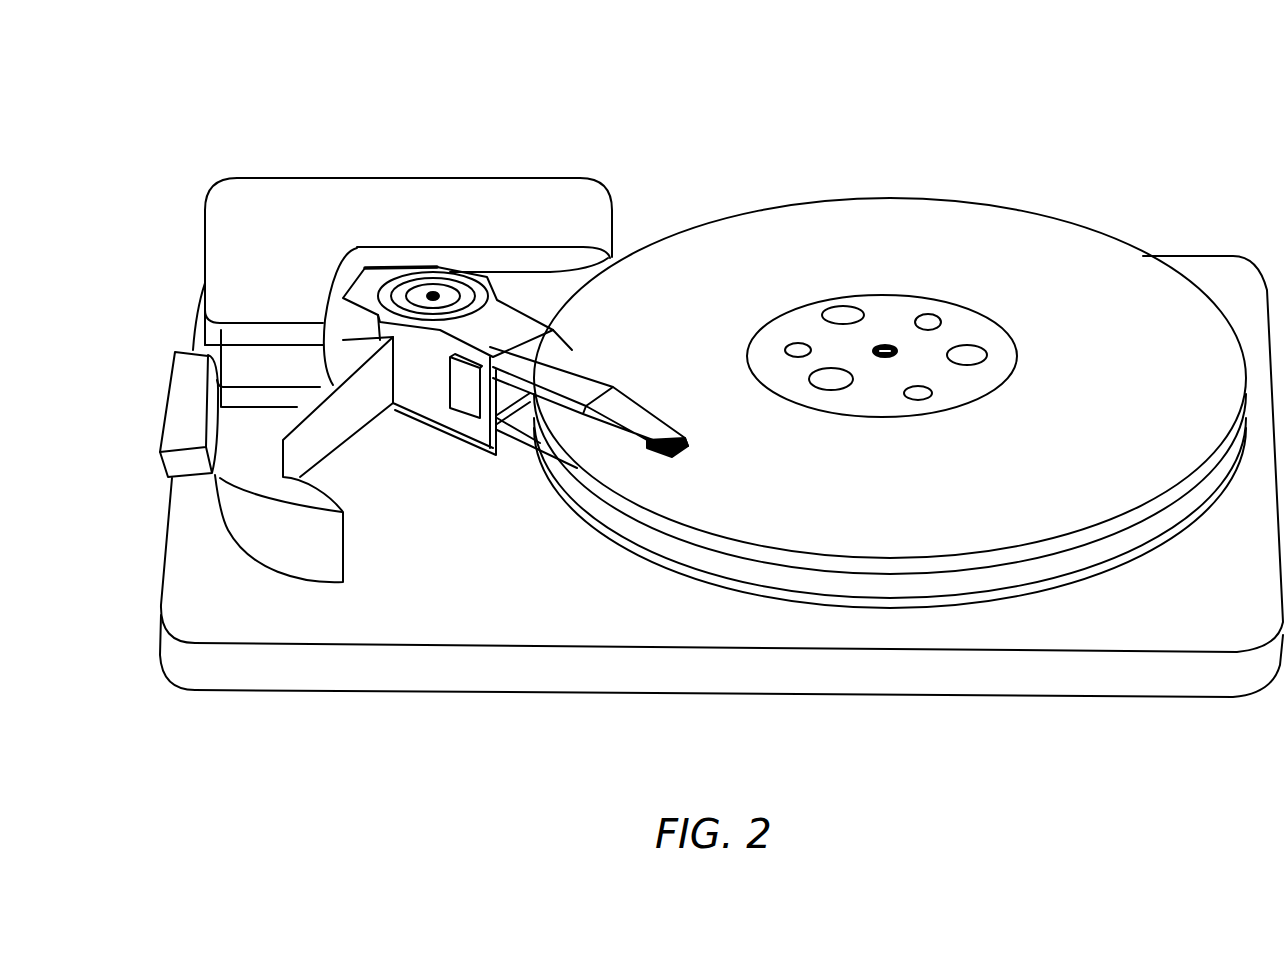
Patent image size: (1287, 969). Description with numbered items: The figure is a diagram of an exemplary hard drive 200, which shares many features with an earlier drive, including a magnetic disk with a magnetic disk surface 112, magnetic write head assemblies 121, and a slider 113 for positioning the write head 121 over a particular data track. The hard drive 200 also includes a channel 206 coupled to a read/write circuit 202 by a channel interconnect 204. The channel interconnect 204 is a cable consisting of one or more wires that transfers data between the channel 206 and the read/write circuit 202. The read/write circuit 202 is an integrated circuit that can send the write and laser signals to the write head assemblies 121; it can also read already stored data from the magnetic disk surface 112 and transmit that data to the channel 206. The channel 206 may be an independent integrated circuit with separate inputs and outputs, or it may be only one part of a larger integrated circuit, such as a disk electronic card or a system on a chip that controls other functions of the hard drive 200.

The hard drive 200 is at (1243, 74).
The magnetic disk surface 112 is at (1026, 257).
The slider 113 is at (508, 330).
The magnetic write head assembly 121 is at (658, 452).
The read/write circuit 202 is at (463, 385).
The channel interconnect 204 is at (282, 548).
The channel 206 is at (187, 403).